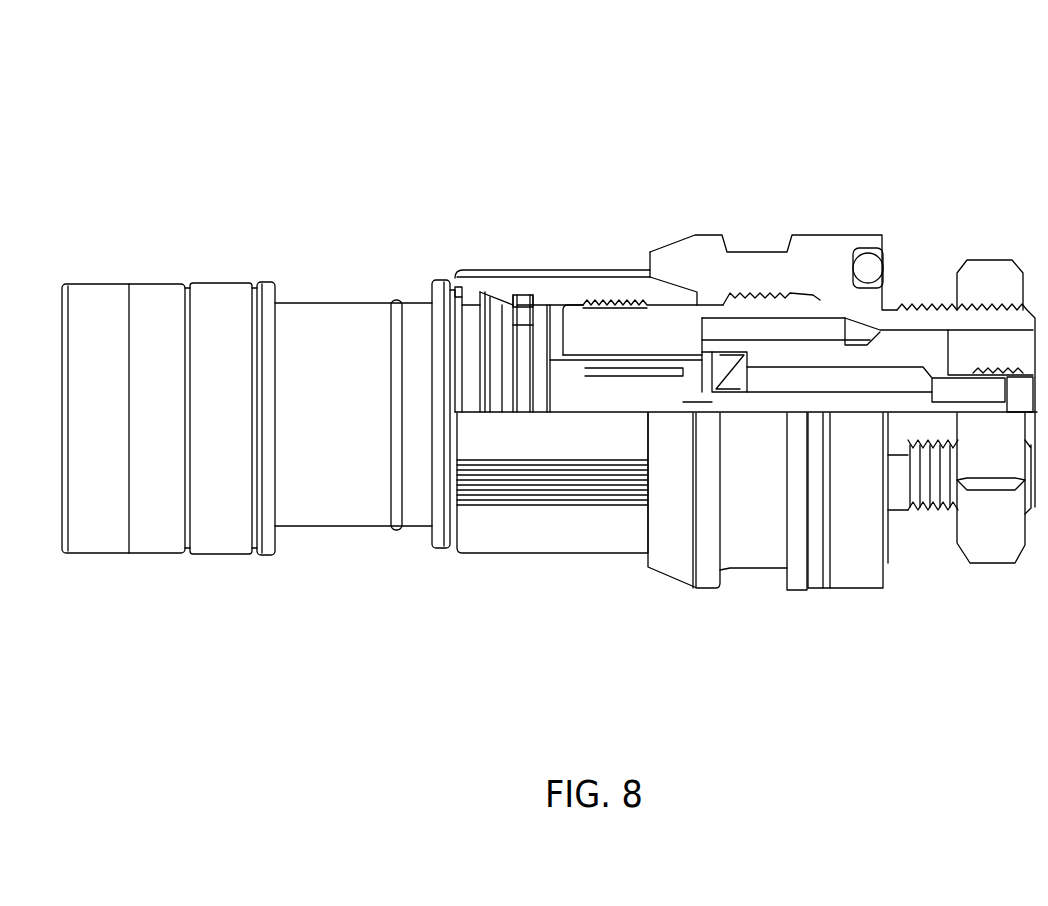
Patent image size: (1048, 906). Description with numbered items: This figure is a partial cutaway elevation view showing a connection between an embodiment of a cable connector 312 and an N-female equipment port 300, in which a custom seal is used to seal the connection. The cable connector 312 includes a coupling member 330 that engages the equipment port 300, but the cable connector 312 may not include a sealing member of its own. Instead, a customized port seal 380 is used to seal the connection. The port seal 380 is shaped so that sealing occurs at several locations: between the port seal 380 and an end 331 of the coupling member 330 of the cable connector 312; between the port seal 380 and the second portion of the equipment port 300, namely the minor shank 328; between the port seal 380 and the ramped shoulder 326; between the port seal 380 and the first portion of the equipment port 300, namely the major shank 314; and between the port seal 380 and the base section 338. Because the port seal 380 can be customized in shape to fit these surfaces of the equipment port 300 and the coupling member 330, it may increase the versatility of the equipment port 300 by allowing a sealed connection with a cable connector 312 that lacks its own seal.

The equipment port 300 is at (432, 160).
The cable connector 312 is at (338, 262).
The major shank 314 is at (788, 285).
The ramped shoulder 326 is at (677, 283).
The minor shank 328 is at (707, 303).
The coupling member 330 is at (585, 287).
The end of the coupling member 331 is at (665, 292).
The base section 338 is at (820, 273).
The port seal 380 is at (722, 263).